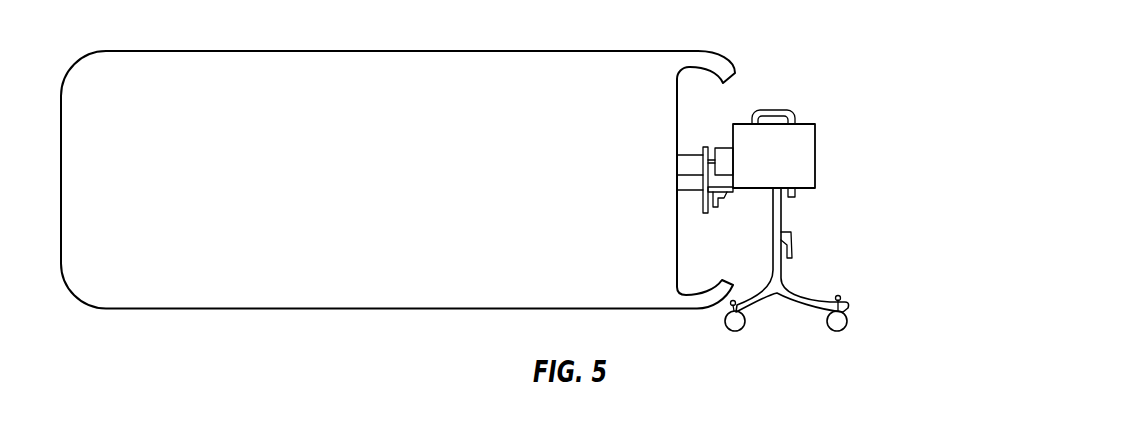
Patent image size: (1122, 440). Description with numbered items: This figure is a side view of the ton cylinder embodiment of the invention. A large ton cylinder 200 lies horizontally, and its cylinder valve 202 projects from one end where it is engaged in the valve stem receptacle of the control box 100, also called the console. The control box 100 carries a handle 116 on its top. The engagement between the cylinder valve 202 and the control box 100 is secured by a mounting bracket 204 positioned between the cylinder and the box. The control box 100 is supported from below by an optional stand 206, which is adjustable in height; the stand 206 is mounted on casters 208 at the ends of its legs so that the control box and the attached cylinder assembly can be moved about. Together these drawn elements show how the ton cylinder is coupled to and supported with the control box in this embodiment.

The ton cylinder 200 is at (348, 51).
The cylinder valve 202 is at (690, 155).
The mounting bracket 204 is at (702, 197).
The control box 100 is at (815, 157).
The handle 116 is at (768, 108).
The optional stand 206 is at (783, 262).
The casters 208 is at (840, 324).